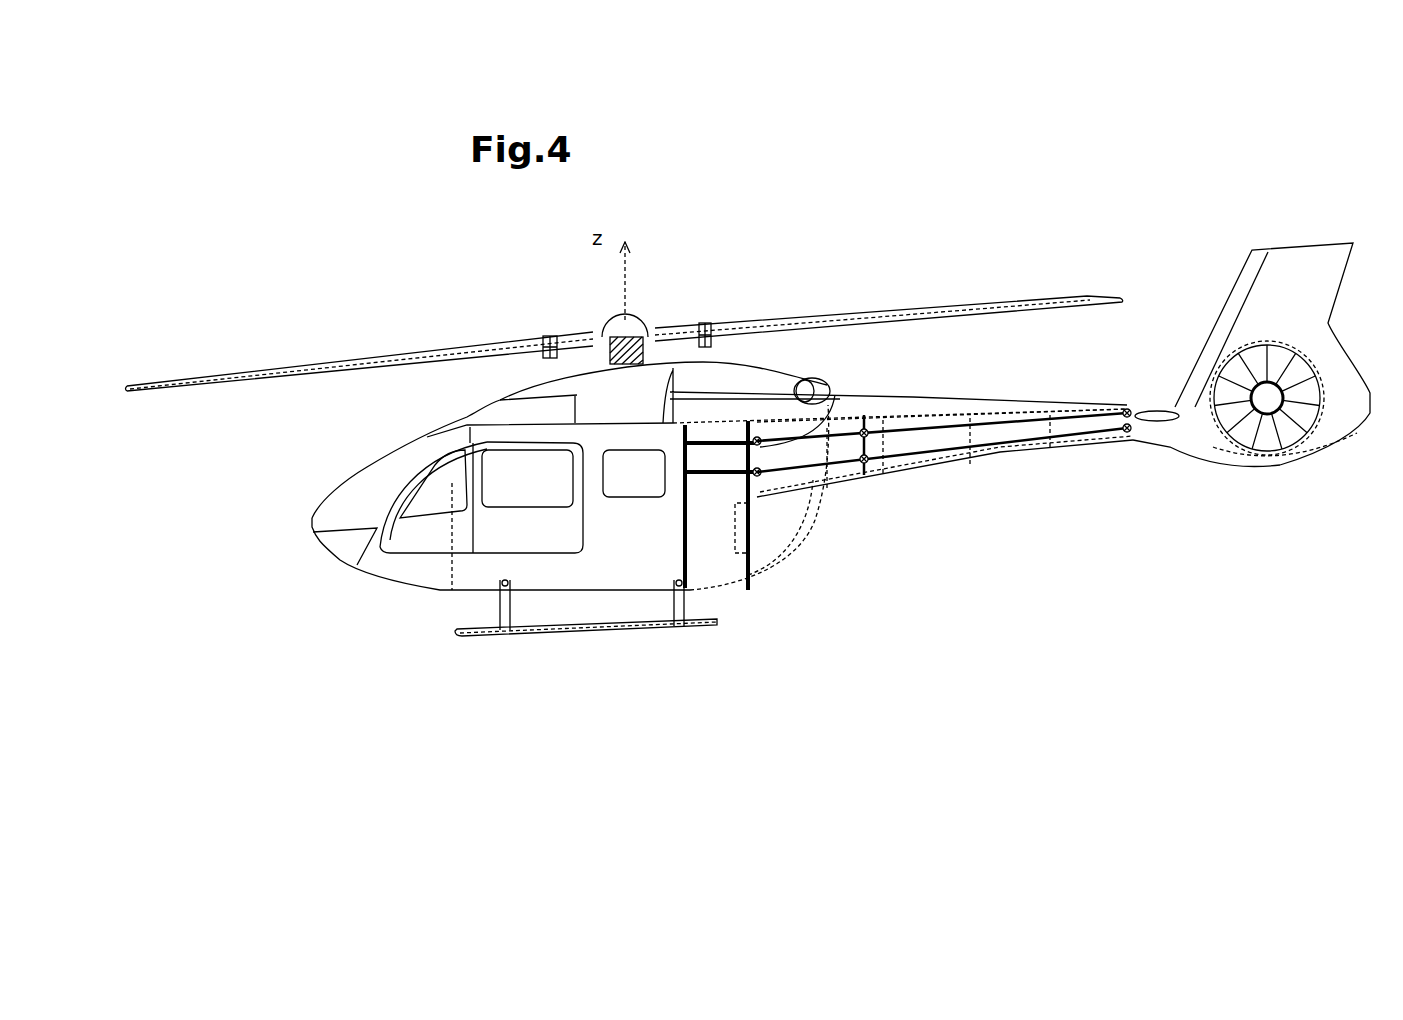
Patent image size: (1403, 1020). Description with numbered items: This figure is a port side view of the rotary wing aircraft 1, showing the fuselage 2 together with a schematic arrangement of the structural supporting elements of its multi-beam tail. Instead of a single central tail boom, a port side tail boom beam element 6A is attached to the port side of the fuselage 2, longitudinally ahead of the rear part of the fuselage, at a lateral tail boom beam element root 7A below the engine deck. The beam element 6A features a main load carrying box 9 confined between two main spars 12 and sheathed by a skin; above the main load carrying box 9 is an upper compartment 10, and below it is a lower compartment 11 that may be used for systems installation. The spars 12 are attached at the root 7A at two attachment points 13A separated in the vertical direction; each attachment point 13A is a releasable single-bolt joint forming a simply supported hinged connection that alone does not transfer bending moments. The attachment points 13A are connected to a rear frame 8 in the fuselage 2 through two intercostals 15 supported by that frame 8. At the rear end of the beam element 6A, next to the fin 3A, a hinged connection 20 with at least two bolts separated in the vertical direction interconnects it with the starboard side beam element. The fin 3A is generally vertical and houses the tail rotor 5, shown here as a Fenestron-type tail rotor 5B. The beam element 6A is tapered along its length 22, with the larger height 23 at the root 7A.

The rotary wing aircraft 1 is at (447, 303).
The fuselage 2 is at (787, 572).
The fin 3A is at (1297, 273).
The tail rotor 5 is at (1282, 456).
The fenestron tail rotor 5B is at (1266, 443).
The port side tail boom beam element 6A is at (1093, 456).
The tail boom beam element root 7A is at (757, 430).
The rear frame 8 is at (688, 572).
The main load carrying box 9 is at (930, 437).
The upper compartment 10 is at (921, 415).
The lower compartment 11 is at (853, 470).
The main spars 12 is at (987, 420).
The attachment points 13A is at (766, 440).
The intercostals 15 is at (708, 437).
The hinged connection 20 is at (1127, 407).
The length 22 is at (1158, 668).
The height 23 is at (864, 415).